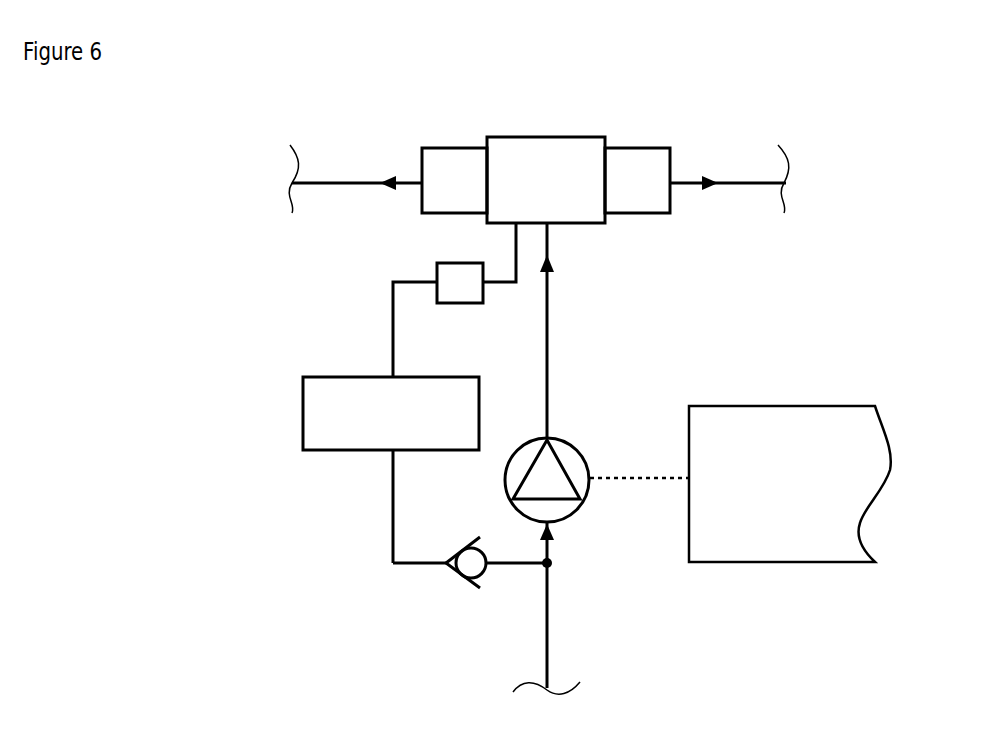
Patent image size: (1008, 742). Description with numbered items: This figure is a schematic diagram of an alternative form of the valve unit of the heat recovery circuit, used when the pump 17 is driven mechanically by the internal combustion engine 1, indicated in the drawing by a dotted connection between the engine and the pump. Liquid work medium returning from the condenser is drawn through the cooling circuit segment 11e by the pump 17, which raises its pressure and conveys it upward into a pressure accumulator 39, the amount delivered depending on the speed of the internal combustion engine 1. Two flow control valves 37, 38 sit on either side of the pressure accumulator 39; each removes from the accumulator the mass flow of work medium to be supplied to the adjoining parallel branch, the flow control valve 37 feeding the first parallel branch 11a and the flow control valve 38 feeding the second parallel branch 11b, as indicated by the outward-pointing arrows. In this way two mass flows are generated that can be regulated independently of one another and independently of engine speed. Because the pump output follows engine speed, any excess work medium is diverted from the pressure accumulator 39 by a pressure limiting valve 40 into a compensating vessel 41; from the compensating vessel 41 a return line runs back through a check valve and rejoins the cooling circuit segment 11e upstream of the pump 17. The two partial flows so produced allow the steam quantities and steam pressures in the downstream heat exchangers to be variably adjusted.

The internal combustion engine 1 is at (760, 497).
The first parallel branch 11a is at (335, 183).
The second parallel branch 11b is at (733, 180).
The cooling circuit segment 11e is at (548, 350).
The pump 17 is at (560, 507).
The flow control valve 37 is at (455, 148).
The flow control valve 38 is at (637, 152).
The pressure accumulator 39 is at (530, 193).
The pressure limiting valve 40 is at (470, 303).
The compensating vessel 41 is at (376, 428).